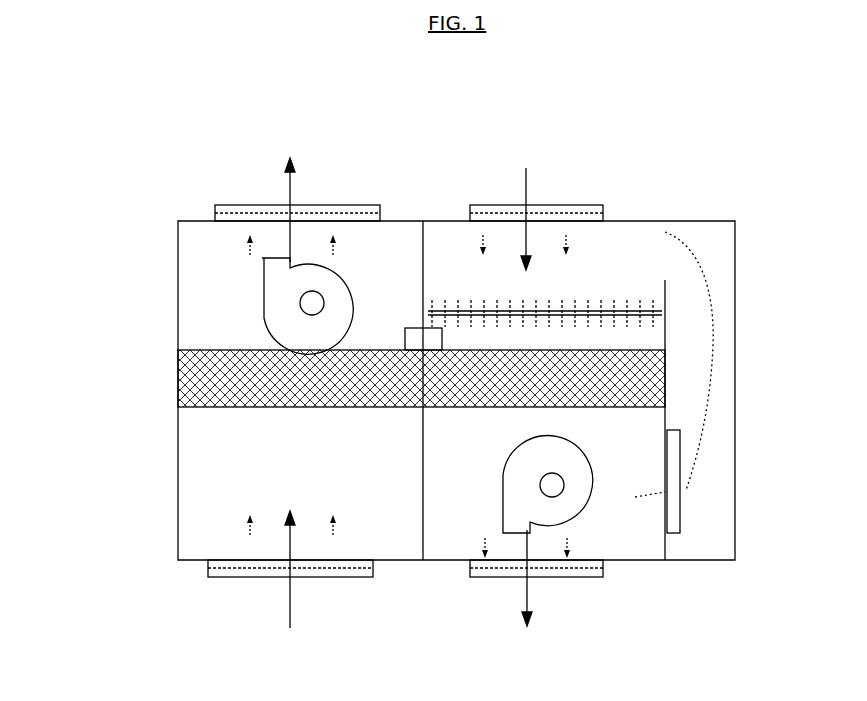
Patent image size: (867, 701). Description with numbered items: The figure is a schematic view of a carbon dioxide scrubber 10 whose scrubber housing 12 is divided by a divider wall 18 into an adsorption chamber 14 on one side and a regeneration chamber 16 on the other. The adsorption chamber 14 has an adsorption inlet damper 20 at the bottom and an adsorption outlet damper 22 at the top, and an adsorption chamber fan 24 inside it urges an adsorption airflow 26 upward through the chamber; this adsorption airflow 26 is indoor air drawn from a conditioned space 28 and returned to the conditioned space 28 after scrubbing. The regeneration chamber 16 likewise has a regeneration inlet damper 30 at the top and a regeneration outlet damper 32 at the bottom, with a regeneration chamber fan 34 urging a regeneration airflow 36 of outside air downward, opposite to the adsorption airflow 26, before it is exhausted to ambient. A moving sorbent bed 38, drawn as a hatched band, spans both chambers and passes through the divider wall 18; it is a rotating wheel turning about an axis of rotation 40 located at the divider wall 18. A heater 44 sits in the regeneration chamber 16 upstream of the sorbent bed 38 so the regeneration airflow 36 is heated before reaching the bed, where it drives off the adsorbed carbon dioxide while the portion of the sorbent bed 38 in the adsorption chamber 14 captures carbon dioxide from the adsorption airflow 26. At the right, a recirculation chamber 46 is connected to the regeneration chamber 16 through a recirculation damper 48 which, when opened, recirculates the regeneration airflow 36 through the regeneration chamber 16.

The CO2 scrubber 10 is at (108, 118).
The scrubber housing 12 is at (178, 452).
The adsorption chamber 14 is at (309, 385).
The regeneration chamber 16 is at (565, 397).
The divider wall 18 is at (423, 560).
The adsorption inlet damper 20 is at (207, 574).
The adsorption outlet damper 22 is at (380, 207).
The adsorption chamber fan 24 is at (307, 306).
The adsorption airflow 26 is at (292, 193).
The conditioned space 28 is at (270, 397).
The regeneration inlet damper 30 is at (603, 207).
The regeneration outlet damper 32 is at (600, 578).
The regeneration chamber fan 34 is at (548, 484).
The regeneration airflow 36 is at (527, 190).
The moving sorbent bed 38 is at (421, 378).
The axis of rotation 40 is at (420, 335).
The heater 44 is at (621, 310).
The recirculation chamber 46 is at (735, 338).
The recirculation damper 48 is at (680, 520).